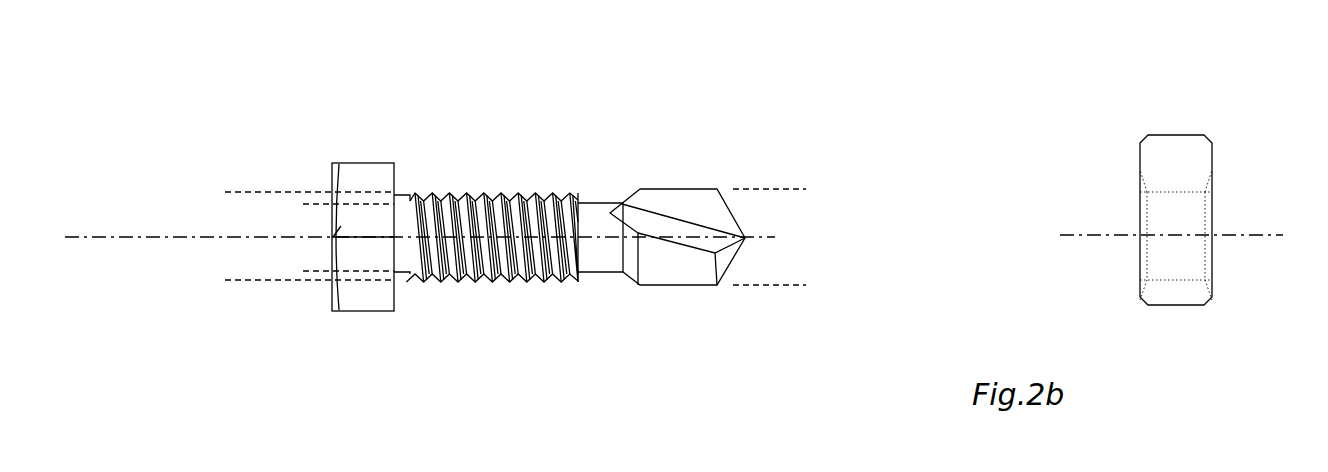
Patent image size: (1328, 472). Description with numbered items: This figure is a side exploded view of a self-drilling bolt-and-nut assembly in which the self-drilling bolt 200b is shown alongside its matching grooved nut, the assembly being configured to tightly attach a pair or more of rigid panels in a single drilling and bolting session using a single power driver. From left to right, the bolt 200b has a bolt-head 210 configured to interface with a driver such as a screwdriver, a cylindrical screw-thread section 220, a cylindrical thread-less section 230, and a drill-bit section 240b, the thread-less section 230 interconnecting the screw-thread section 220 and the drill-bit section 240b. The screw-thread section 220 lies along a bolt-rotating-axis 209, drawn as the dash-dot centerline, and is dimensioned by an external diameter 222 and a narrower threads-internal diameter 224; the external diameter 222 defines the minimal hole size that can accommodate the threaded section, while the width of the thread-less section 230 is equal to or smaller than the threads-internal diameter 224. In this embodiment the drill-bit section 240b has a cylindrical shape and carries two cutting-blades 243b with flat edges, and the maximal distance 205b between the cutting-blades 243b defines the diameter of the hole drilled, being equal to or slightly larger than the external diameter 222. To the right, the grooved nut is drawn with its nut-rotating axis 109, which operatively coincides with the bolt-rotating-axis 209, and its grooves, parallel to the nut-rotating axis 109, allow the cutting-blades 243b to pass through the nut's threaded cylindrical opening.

The self-drilling bolt 200b is at (279, 99).
The bolt-head 210 is at (397, 192).
The cylindrical screw-thread section 220 is at (580, 193).
The cylindrical thread-less section 230 is at (626, 203).
The drill-bit section 240b is at (736, 220).
The cutting-blades 243b is at (691, 251).
The external diameter 222 is at (225, 280).
The threads-internal diameter 224 is at (315, 271).
The maximal distance between the cutting-blades 205b is at (815, 189).
The bolt-rotating-axis 209 is at (82, 238).
The nut-rotating axis 109 is at (1230, 0).